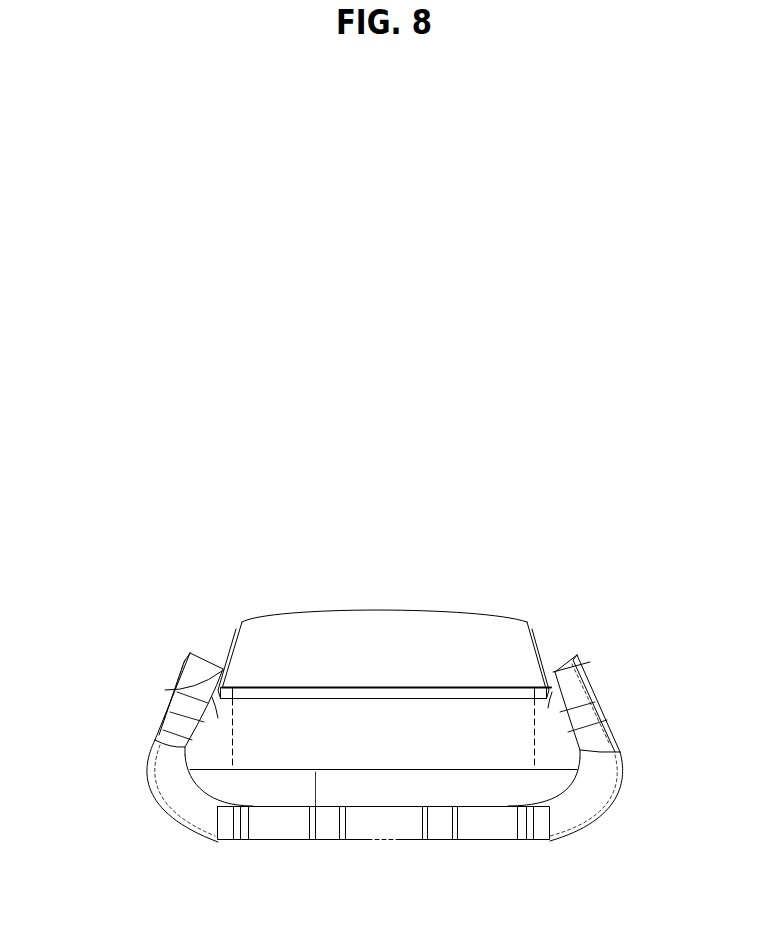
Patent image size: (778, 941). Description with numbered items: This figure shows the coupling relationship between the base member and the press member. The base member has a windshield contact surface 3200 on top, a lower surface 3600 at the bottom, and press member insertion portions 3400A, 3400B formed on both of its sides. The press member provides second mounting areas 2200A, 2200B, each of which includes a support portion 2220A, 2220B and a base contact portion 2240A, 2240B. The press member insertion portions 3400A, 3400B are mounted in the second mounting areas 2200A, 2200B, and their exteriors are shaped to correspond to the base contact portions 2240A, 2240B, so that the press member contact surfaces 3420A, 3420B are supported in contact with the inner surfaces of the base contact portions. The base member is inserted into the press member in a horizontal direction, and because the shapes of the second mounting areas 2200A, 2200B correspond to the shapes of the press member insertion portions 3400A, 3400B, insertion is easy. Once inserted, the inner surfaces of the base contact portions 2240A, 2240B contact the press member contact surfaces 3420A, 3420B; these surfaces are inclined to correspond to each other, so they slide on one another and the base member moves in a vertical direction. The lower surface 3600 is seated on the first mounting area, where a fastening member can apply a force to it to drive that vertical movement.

The windshield contact surface 3200 is at (385, 636).
The press member insertion portion 3400A is at (589, 664).
The press member insertion portion 3400B is at (186, 666).
The press member contact surface 3420A is at (548, 691).
The press member contact surface 3420B is at (165, 690).
The base contact portion 2240A is at (583, 717).
The base contact portion 2240B is at (186, 717).
The second mounting area 2200A is at (629, 762).
The second mounting area 2200B is at (134, 762).
The support portion 2220A is at (592, 805).
The support portion 2220B is at (175, 803).
The lower surface 3600 is at (489, 804).